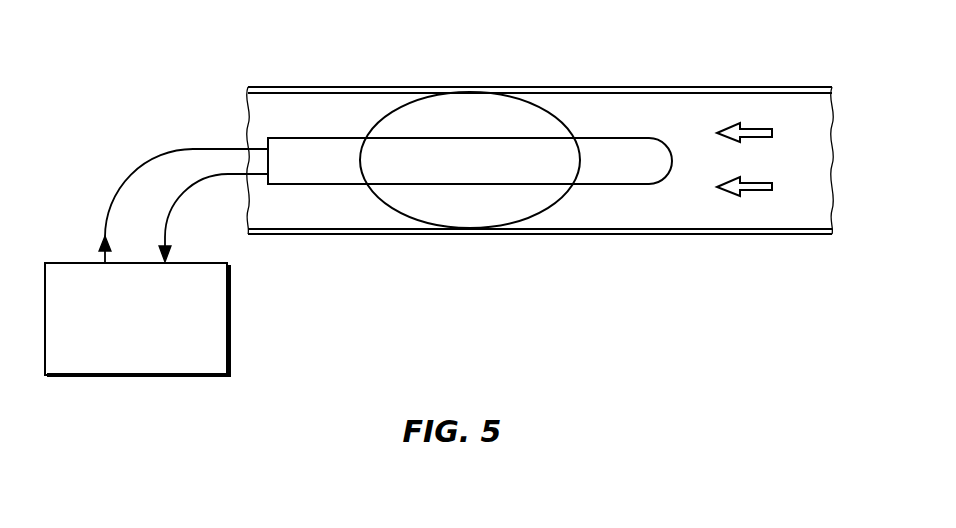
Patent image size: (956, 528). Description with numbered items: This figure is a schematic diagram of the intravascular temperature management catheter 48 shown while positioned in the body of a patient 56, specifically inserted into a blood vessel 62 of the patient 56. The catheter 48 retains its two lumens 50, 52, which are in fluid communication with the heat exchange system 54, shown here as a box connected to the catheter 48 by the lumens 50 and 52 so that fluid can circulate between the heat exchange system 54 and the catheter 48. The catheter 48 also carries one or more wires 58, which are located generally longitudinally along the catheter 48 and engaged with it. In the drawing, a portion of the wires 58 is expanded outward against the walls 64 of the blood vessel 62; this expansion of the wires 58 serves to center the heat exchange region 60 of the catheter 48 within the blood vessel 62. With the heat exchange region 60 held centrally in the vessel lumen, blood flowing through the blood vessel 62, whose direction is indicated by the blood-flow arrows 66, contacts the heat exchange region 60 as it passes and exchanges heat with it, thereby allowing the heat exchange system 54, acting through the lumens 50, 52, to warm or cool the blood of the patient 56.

The intravascular temperature management catheter 48 is at (338, 130).
The lumen 50 is at (127, 185).
The lumen 52 is at (173, 206).
The heat exchange system 54 is at (138, 376).
The patient 56 is at (697, 86).
The wire 58 is at (386, 113).
The heat exchange region 60 is at (616, 137).
The blood vessel 62 is at (670, 205).
The wall 64 is at (575, 228).
The blood-flow arrows 66 is at (755, 123).